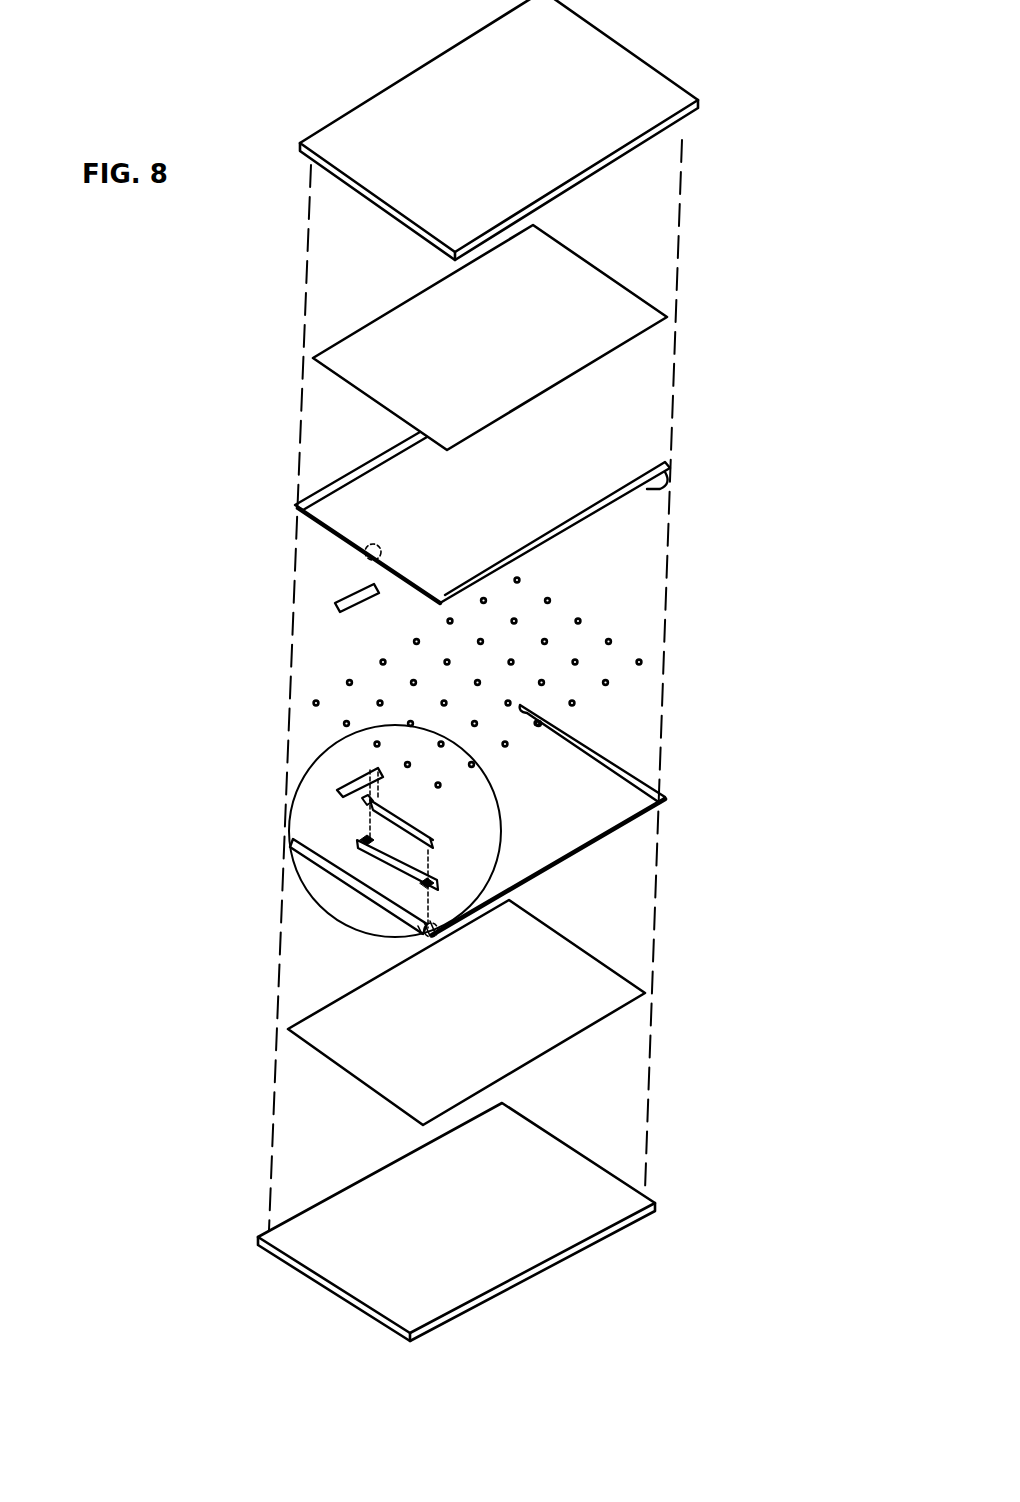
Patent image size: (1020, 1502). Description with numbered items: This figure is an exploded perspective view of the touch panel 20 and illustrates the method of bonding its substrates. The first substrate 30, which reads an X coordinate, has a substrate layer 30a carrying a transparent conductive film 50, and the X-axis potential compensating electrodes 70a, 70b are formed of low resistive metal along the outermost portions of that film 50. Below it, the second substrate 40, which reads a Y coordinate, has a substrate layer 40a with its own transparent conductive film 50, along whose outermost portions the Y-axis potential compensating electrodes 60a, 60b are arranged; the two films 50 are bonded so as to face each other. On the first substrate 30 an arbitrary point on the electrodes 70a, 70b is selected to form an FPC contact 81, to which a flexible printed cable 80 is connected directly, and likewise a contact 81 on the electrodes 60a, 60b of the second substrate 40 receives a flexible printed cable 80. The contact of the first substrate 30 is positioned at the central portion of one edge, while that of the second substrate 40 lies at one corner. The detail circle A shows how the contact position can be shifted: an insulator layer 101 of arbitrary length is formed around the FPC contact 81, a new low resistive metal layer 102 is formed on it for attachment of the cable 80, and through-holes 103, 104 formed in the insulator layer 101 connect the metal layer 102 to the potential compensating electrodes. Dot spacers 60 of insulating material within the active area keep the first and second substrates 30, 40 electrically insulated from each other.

The electrode assembly 20 is at (178, 120).
The first substrate 30 is at (767, 460).
The substrate layer 30a is at (658, 82).
The second substrate 40 is at (762, 1161).
The substrate layer 40a is at (608, 1188).
The transparent conductive film 50 is at (638, 302).
The dot spacers 60 is at (383, 659).
The Y-axis potential compensating electrode 60a is at (420, 918).
The Y-axis potential compensating electrode 60b is at (627, 770).
The X-axis potential compensating electrode 70a is at (353, 467).
The X-axis potential compensating electrode 70b is at (671, 470).
The flexible printed cable 80 is at (355, 585).
The FPC contact 81 is at (357, 552).
The insulator layer 101 is at (398, 858).
The low resistive metal layer 102 is at (372, 812).
The through-hole 103 is at (370, 842).
The through-hole 104 is at (426, 886).
The detail region A is at (333, 744).